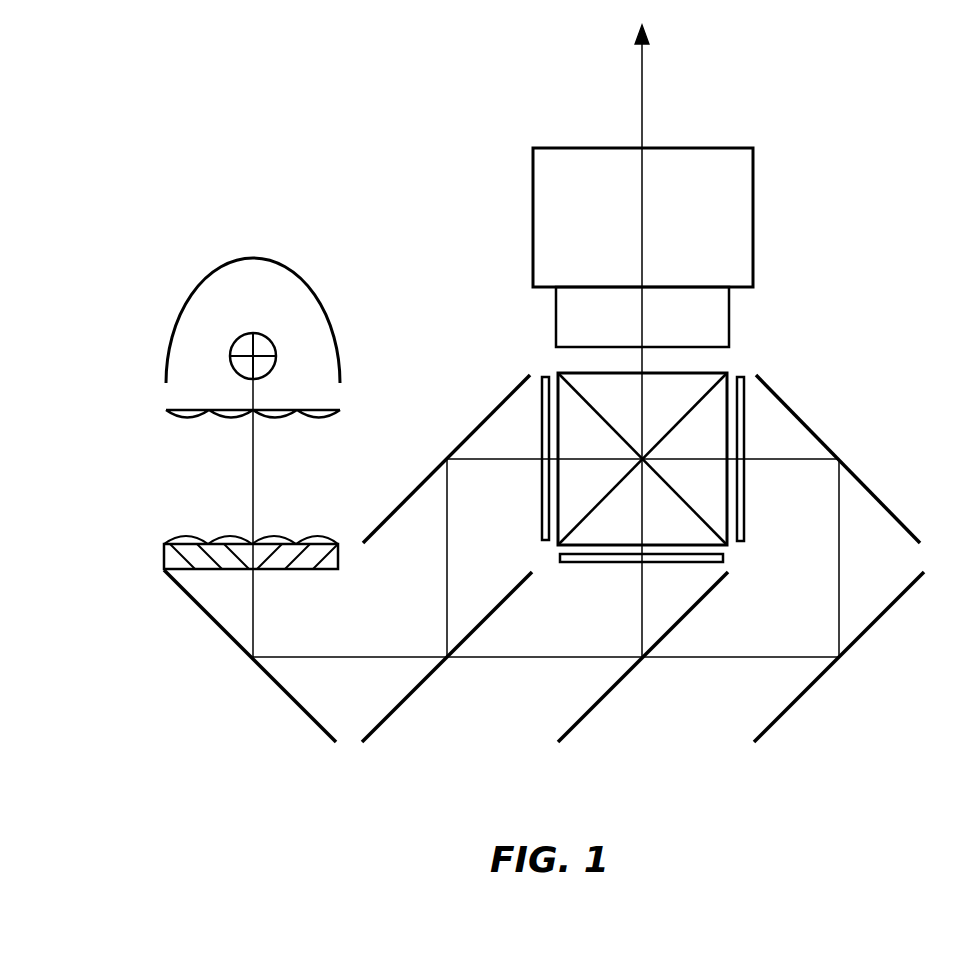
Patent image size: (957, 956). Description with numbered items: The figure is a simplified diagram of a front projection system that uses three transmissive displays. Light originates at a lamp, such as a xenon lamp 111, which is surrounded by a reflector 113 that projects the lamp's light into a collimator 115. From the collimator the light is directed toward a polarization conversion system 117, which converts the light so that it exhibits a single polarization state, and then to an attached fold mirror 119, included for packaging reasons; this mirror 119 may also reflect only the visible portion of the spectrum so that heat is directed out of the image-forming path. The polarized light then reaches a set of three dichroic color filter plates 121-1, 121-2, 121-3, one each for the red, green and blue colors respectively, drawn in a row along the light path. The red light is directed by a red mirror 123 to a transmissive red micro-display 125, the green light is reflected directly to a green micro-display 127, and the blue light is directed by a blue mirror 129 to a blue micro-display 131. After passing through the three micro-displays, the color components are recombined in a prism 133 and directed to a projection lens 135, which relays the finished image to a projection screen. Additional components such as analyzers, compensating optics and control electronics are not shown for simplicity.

The xenon lamp 111 is at (273, 346).
The reflector 113 is at (341, 347).
The collimator 115 is at (342, 416).
The polarization conversion system 117 is at (163, 556).
The fold mirror 119 is at (282, 692).
The dichroic color filter plate 121-1 is at (405, 700).
The dichroic color filter plate 121-2 is at (599, 700).
The dichroic color filter plate 121-3 is at (817, 679).
The red mirror 123 is at (405, 499).
The transmissive red micro-display 125 is at (540, 503).
The green micro-display 127 is at (605, 564).
The blue mirror 129 is at (802, 423).
The blue micro-display 131 is at (745, 493).
The prism 133 is at (719, 373).
The projection lens 135 is at (754, 224).